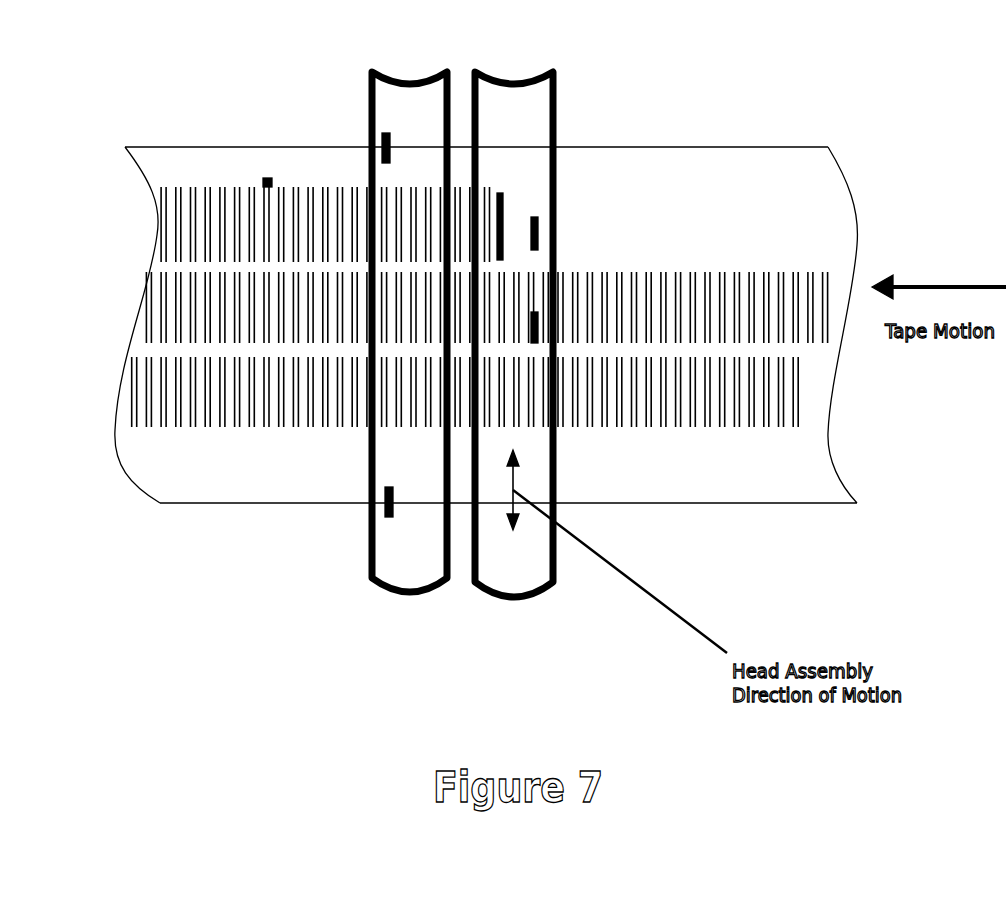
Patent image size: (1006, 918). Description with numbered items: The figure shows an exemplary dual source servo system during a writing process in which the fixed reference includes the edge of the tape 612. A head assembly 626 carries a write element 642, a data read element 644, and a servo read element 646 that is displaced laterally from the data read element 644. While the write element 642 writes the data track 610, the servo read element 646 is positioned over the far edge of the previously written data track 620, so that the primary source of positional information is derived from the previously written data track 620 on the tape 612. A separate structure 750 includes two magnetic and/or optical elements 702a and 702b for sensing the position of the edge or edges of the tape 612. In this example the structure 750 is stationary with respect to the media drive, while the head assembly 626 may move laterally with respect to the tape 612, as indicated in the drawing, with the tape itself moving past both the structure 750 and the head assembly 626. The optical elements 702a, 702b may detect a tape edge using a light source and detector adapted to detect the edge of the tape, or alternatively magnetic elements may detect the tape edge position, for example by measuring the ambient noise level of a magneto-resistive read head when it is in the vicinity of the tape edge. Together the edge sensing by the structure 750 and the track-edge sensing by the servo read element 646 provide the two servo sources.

The data track 610 is at (263, 178).
The tape 612 is at (848, 192).
The previously written data track 620 is at (656, 268).
The head assembly 626 is at (545, 582).
The write element 642 is at (510, 183).
The data read element 644 is at (548, 209).
The servo read element 646 is at (545, 355).
The magnetic and/or optical element 702a is at (369, 130).
The magnetic and/or optical element 702b is at (372, 523).
The structure 750 is at (397, 595).